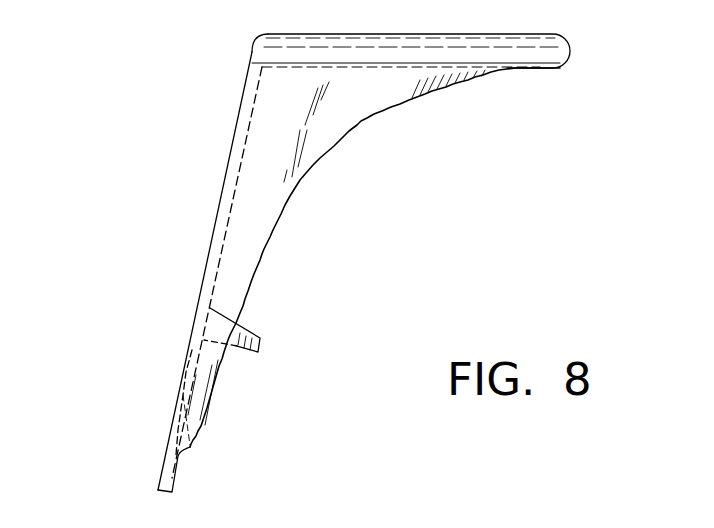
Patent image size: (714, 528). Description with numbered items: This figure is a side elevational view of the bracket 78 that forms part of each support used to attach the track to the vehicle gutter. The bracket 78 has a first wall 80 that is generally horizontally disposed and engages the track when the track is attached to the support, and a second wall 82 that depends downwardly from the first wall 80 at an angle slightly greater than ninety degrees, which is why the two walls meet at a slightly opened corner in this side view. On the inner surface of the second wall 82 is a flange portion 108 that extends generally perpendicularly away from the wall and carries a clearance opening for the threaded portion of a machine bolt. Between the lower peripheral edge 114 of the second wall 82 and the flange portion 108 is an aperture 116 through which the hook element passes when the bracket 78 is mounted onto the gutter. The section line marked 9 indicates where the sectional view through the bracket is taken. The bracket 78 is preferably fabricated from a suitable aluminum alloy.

The bracket 78 is at (226, 83).
The first wall 80 is at (420, 35).
The second wall 82 is at (201, 283).
The flange portion 108 is at (263, 340).
The lower peripheral edge 114 is at (162, 493).
The aperture 116 is at (181, 373).
The section line 9- 9 is at (213, 223).